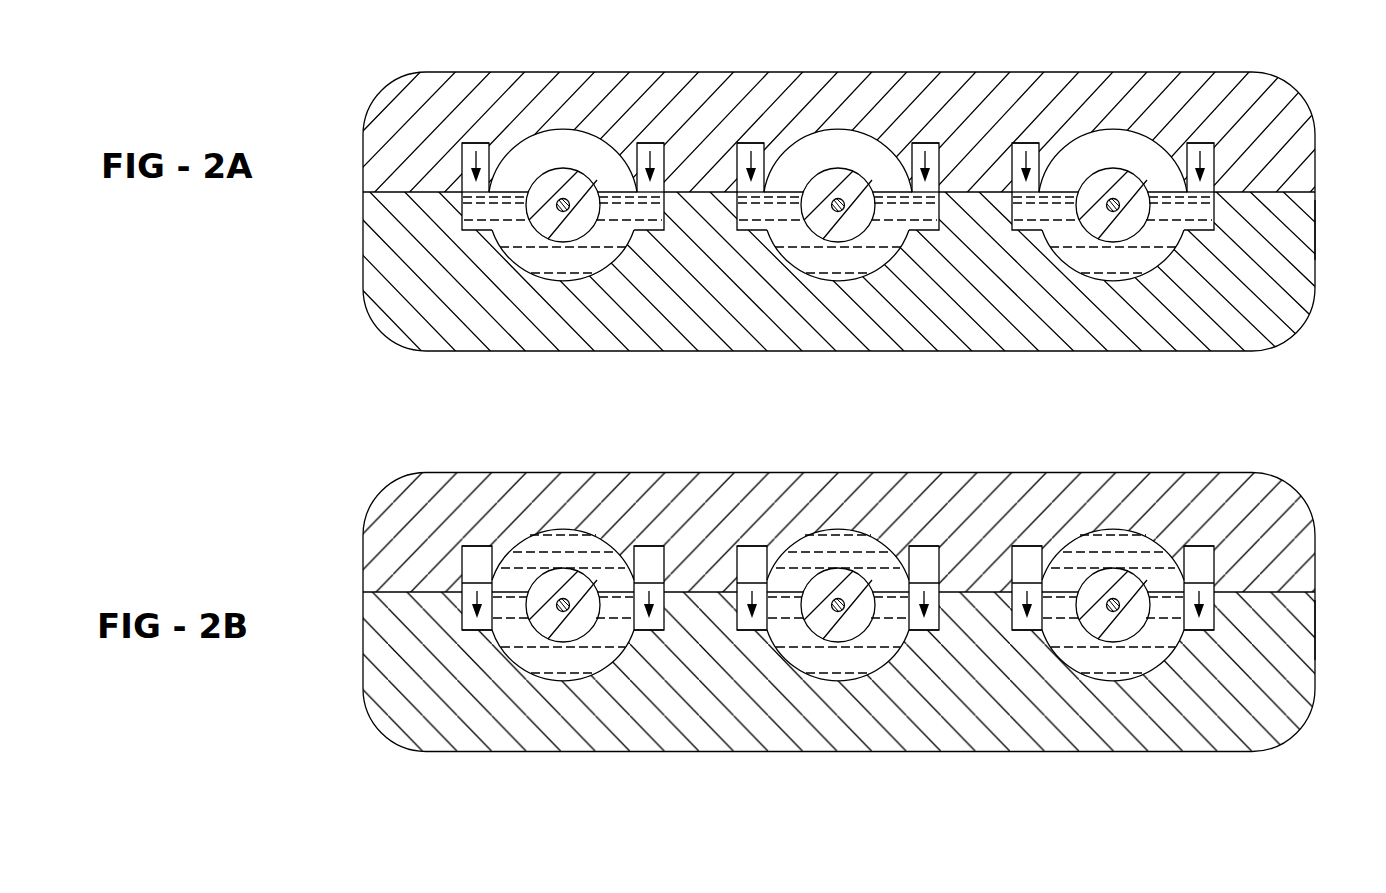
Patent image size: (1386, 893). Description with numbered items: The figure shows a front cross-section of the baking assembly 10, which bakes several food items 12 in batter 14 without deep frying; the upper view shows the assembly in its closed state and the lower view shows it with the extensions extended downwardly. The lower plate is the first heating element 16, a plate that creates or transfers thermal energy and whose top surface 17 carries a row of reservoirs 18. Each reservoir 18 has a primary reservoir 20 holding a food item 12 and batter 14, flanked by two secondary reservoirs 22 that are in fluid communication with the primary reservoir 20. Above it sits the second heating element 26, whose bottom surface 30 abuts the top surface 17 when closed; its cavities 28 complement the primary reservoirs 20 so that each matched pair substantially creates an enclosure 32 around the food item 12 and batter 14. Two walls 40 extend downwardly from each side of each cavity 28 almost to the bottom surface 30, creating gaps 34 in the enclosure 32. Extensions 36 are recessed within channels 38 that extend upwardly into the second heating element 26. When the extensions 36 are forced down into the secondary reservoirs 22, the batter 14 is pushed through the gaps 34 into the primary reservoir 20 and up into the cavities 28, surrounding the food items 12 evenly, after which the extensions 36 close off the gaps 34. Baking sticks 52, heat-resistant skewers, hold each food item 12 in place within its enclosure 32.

In FIG. 2A, the baking assembly 10 is at (353, 57).
In FIG. 2B, the baking assembly 10 is at (310, 458).
In FIG. 2A, the food item 12 is at (537, 180).
In FIG. 2B, the food item 12 is at (560, 556).
In FIG. 2A, the batter 14 is at (493, 188).
In FIG. 2B, the batter 14 is at (517, 562).
In FIG. 2A, the first heating element 16 is at (363, 255).
In FIG. 2B, the first heating element 16 is at (363, 672).
In FIG. 2A, the top surface 17 is at (393, 190).
In FIG. 2B, the top surface 17 is at (385, 592).
In FIG. 2A, the reservoir 18 is at (553, 288).
In FIG. 2B, the reservoir 18 is at (550, 686).
In FIG. 2A, the primary reservoir 20 is at (610, 275).
In FIG. 2B, the primary reservoir 20 is at (567, 685).
In FIG. 2A, the secondary reservoir 22 is at (470, 232).
In FIG. 2B, the secondary reservoir 22 is at (490, 632).
In FIG. 2A, the second heating element 26 is at (363, 142).
In FIG. 2B, the second heating element 26 is at (363, 578).
In FIG. 2A, the cavity 28 is at (584, 145).
In FIG. 2B, the cavity 28 is at (568, 530).
In FIG. 2A, the bottom surface 30 is at (1316, 232).
In FIG. 2B, the bottom surface 30 is at (1315, 620).
In FIG. 2A, the enclosure 32 is at (583, 174).
In FIG. 2B, the enclosure 32 is at (520, 658).
In FIG. 2A, the gap 34 is at (462, 213).
In FIG. 2B, the gap 34 is at (505, 592).
In FIG. 2A, the extension 36 is at (478, 158).
In FIG. 2B, the extension 36 is at (462, 629).
In FIG. 2A, the channel 38 is at (478, 143).
In FIG. 2B, the channel 38 is at (470, 546).
In FIG. 2A, the wall 40 is at (464, 143).
In FIG. 2B, the wall 40 is at (463, 546).
In FIG. 2A, the baking stick 52 is at (566, 199).
In FIG. 2B, the baking stick 52 is at (575, 615).